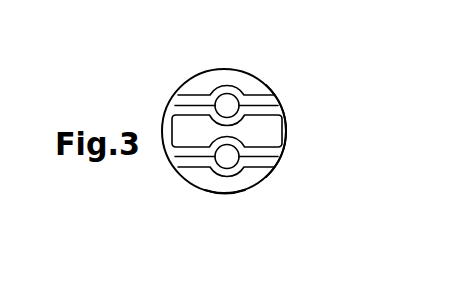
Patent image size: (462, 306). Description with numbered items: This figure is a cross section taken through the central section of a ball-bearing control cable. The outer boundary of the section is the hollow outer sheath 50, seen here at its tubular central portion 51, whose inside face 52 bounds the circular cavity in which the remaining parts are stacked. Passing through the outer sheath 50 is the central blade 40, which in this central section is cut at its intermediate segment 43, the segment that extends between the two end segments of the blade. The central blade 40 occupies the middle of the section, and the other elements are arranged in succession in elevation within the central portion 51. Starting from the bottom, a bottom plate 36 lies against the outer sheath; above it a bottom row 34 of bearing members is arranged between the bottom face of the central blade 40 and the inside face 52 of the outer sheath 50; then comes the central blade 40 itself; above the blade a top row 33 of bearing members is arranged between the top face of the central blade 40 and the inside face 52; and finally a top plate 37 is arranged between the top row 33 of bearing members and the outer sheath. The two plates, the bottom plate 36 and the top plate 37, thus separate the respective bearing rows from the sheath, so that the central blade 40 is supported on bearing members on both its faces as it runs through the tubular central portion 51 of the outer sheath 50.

The top row of bearing members 33 is at (286, 105).
The bottom row of bearing members 34 is at (289, 157).
The bottom plate 36 is at (260, 167).
The top plate 37 is at (203, 93).
The central blade 40 is at (287, 134).
The intermediate segment 43 is at (272, 125).
The outer sheath 50 is at (250, 110).
The tubular central portion 51 is at (266, 85).
The inside face 52 is at (234, 195).